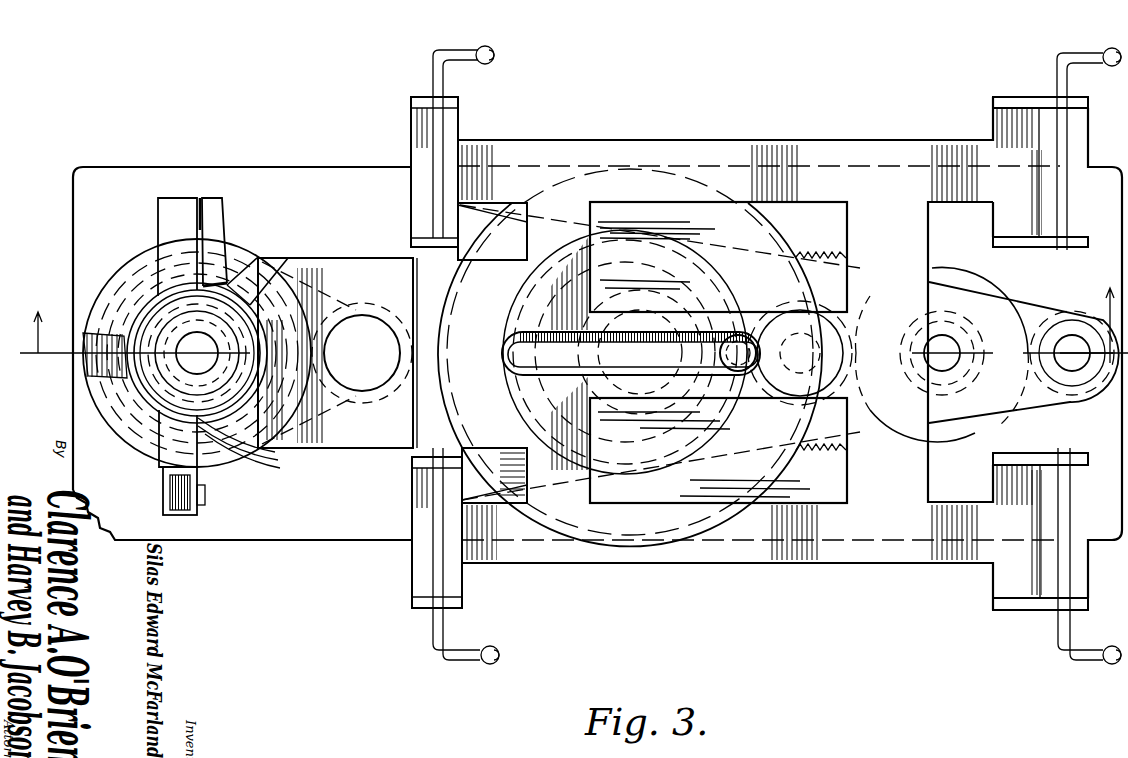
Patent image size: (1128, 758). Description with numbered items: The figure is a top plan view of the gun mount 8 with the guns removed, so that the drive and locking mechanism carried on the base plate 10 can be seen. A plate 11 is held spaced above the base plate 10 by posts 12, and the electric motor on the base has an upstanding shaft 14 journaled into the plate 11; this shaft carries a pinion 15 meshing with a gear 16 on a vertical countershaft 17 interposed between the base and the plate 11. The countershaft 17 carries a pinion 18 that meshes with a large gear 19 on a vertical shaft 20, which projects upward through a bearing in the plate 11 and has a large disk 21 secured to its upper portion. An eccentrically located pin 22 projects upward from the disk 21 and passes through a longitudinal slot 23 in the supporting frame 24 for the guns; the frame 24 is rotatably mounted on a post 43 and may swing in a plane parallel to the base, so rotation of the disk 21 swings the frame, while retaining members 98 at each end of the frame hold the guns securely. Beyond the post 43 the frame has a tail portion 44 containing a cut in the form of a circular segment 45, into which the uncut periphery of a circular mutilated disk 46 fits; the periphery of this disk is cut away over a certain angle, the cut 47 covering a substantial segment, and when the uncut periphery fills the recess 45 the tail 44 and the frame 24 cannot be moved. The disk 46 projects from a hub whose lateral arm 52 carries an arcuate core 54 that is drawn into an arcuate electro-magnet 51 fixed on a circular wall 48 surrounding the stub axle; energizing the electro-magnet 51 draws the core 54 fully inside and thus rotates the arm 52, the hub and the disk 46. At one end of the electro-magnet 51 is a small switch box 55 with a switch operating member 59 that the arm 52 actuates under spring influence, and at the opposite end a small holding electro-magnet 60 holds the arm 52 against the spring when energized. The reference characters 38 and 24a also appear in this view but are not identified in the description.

The gun mount 8 is at (661, 130).
The base plate 10 is at (265, 178).
The plate 11 is at (1022, 402).
The posts 12 is at (1076, 365).
The upstanding shaft 14 is at (950, 340).
The pinion 15 is at (1018, 322).
The gear 16 is at (811, 256).
The vertical countershaft 17 is at (802, 444).
The pinion 18 is at (848, 278).
The large gear 19 is at (716, 258).
The vertical shaft 20 is at (667, 305).
The large disk 21 is at (775, 462).
The eccentrically located pin 22 is at (732, 370).
The longitudinal slot 23 is at (545, 380).
The supporting frame 24 is at (768, 150).
The pitch circle of main gear 24a is at (690, 305).
The drum 38 is at (139, 241).
The post 43 is at (362, 325).
The tail portion 44 is at (366, 450).
The circular segment 45 is at (262, 300).
The circular mutilated disk 46 is at (215, 425).
The cut 47 is at (165, 392).
The circular wall 48 is at (125, 388).
The electro-magnet 51 is at (90, 368).
The arm 52 is at (222, 212).
The arcuate core 54 is at (252, 440).
The switch box 55 is at (175, 205).
The switch operating member 59 is at (200, 205).
The holding electro-magnet 60 is at (188, 515).
The retaining members 98 is at (443, 127).